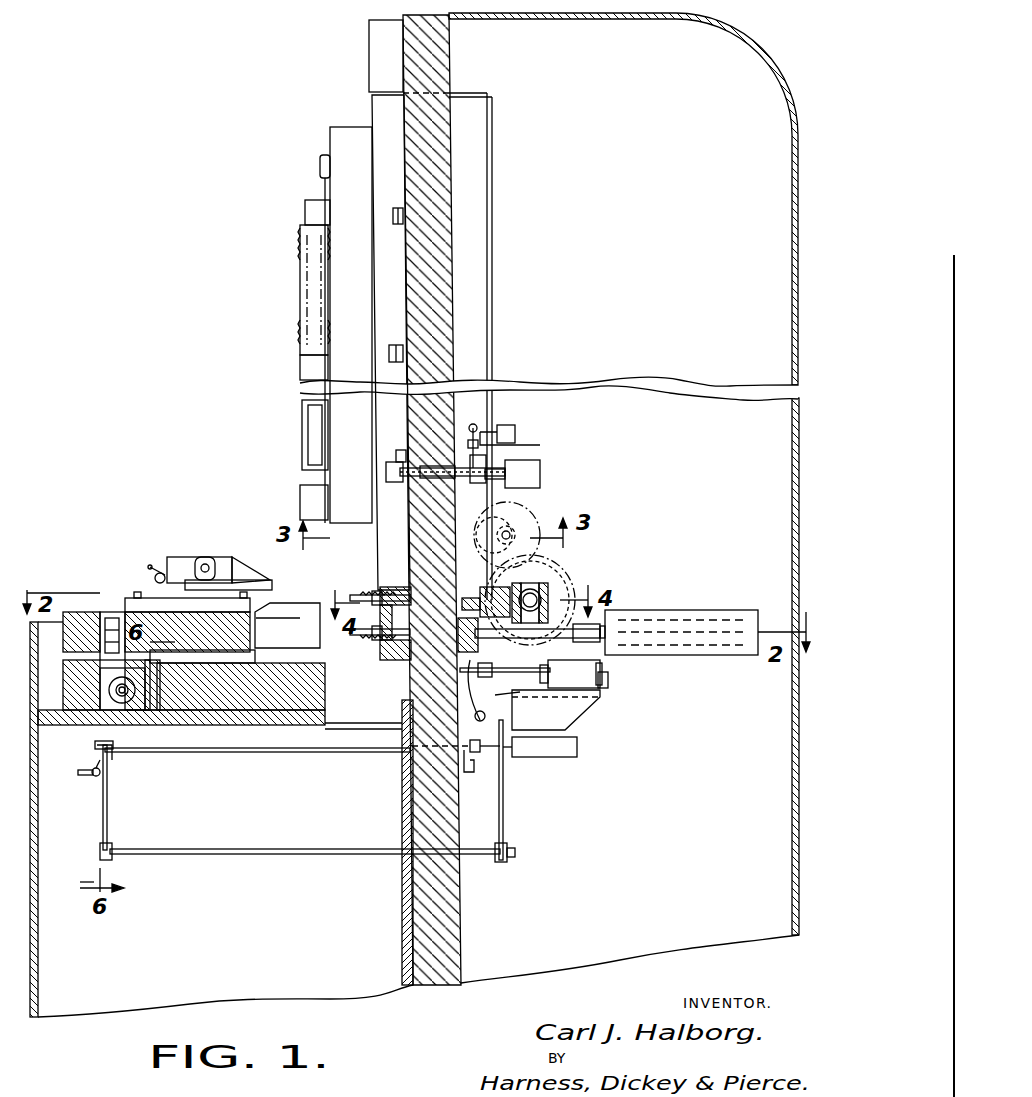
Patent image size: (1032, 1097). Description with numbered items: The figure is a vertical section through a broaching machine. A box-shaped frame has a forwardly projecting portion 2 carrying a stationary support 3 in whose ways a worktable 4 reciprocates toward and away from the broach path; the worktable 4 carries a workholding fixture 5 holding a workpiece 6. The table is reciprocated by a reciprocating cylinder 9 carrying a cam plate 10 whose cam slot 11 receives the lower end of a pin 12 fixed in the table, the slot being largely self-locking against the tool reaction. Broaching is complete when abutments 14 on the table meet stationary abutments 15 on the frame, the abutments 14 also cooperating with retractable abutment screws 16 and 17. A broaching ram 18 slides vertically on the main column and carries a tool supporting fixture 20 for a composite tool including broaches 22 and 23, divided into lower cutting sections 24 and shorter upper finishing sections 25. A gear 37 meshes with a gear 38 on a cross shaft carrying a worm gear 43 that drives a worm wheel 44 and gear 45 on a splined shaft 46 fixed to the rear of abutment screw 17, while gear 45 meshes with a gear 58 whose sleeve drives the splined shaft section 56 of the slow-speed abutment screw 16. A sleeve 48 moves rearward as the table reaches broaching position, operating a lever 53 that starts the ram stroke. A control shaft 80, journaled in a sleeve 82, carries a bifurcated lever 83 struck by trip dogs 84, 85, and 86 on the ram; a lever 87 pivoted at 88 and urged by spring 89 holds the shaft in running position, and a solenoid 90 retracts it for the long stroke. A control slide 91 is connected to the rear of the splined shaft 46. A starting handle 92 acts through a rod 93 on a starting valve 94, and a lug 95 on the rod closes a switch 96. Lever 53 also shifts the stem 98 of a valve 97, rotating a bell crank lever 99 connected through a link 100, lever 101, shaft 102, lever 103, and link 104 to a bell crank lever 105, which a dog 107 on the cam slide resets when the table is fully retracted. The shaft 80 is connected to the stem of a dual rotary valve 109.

The forwardly projecting portion 2 is at (103, 1000).
The stationary support 3 is at (305, 700).
The worktable 4 is at (75, 612).
The workholding fixture 5 is at (212, 556).
The workpiece 6 is at (272, 588).
The reciprocating cylinder 9 is at (130, 705).
The cam plate 10 is at (160, 670).
The cam slot 11 is at (80, 672).
The pin 12 is at (100, 645).
The abutments 14 is at (315, 648).
The stationary abutments 15 is at (372, 598).
The abutment screw 16 is at (378, 591).
The abutment screw 17 is at (378, 640).
The broaching ram 18 is at (380, 113).
The tool supporting fixture 20 is at (330, 148).
The broach 22 is at (300, 378).
The broach 23 is at (300, 493).
The lower cutting sections 24 is at (300, 435).
The upper finishing sections 25 is at (300, 318).
The gear 37 is at (535, 528).
The gear 38 is at (572, 590).
The worm gear 43 is at (572, 585).
The worm wheel 44 is at (535, 640).
The gear 45 is at (552, 672).
The splined shaft 46 is at (490, 668).
The sleeve 48 is at (395, 662).
The lever 53 is at (462, 652).
The splined shaft section 56 is at (486, 590).
The gear 58 is at (533, 596).
The shaft 80 is at (455, 480).
The sleeve 82 is at (430, 492).
The bifurcated lever 83 is at (398, 483).
The trip dog 84 is at (396, 456).
The trip dog 85 is at (389, 354).
The trip dog 86 is at (393, 216).
The lever 87 is at (473, 428).
The pivot 88 is at (470, 452).
The spring 89 is at (525, 445).
The solenoid 90 is at (505, 425).
The control slide 91 is at (715, 602).
The starting handle 92 is at (92, 778).
The rod 93 is at (200, 752).
The starting valve 94 is at (535, 757).
The lug 95 is at (476, 752).
The switch 96 is at (468, 772).
The valve 97 is at (600, 682).
The stem 98 is at (556, 710).
The bell crank lever 99 is at (476, 716).
The link 100 is at (499, 812).
The lever 101 is at (515, 850).
The shaft 102 is at (330, 855).
The lever 103 is at (100, 860).
The link 104 is at (110, 812).
The bell crank lever 105 is at (97, 748).
The dog 107 is at (90, 688).
The dual rotary valve 109 is at (540, 474).